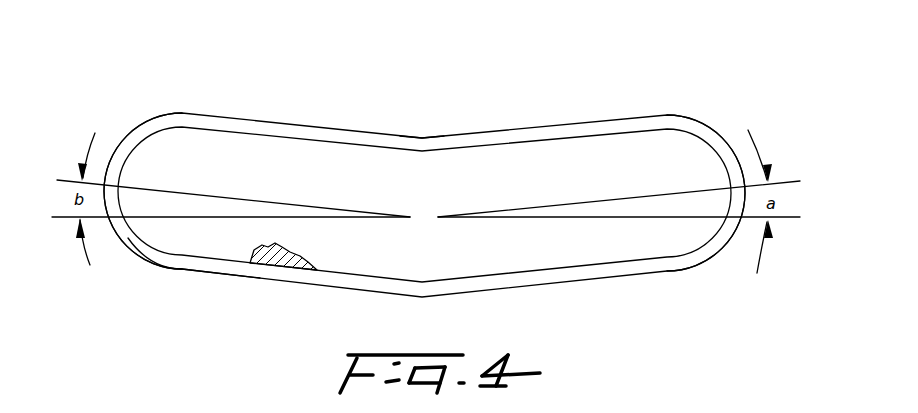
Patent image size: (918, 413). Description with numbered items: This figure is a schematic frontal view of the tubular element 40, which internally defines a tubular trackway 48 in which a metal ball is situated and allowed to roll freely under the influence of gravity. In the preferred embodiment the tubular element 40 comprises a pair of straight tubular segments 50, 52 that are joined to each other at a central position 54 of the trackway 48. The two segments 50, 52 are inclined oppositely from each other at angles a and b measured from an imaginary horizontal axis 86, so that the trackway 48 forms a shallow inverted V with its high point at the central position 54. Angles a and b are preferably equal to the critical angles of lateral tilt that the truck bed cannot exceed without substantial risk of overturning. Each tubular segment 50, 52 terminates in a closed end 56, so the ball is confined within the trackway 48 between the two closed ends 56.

The tubular element 40 is at (192, 120).
The tubular trackway 48 is at (275, 263).
The tubular segment 50 is at (308, 132).
The tubular segment 52 is at (577, 130).
The central position 54 is at (430, 130).
The closed end 56 is at (148, 258).
The imaginary horizontal axis 86 is at (558, 218).